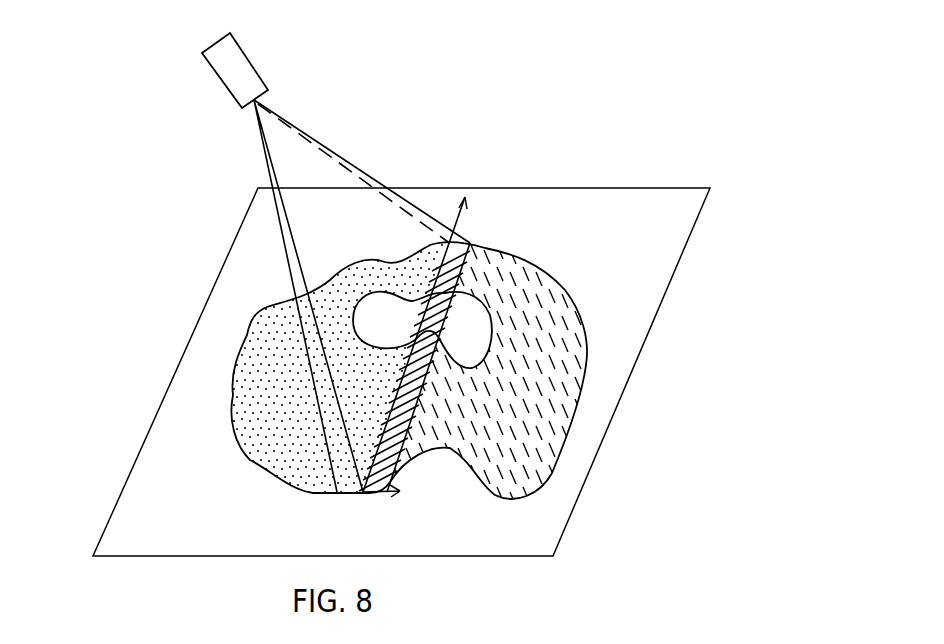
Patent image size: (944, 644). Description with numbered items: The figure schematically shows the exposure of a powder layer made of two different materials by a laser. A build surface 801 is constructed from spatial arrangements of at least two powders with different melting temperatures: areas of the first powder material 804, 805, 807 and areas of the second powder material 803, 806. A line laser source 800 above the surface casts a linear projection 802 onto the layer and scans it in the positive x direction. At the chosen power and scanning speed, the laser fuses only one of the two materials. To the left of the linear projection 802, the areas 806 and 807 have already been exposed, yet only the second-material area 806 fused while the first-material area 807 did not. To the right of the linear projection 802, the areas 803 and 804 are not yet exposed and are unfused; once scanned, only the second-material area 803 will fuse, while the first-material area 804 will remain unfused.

The line laser source 800 is at (235, 67).
The build surface 801 is at (702, 208).
The linear projection 802 is at (392, 390).
The area of powder material P2 803 is at (547, 402).
The area of powder material P1 804 is at (475, 345).
The area of powder material P1 805 is at (523, 535).
The area of powder material P2 806 is at (277, 422).
The area of powder material P1 807 is at (387, 315).